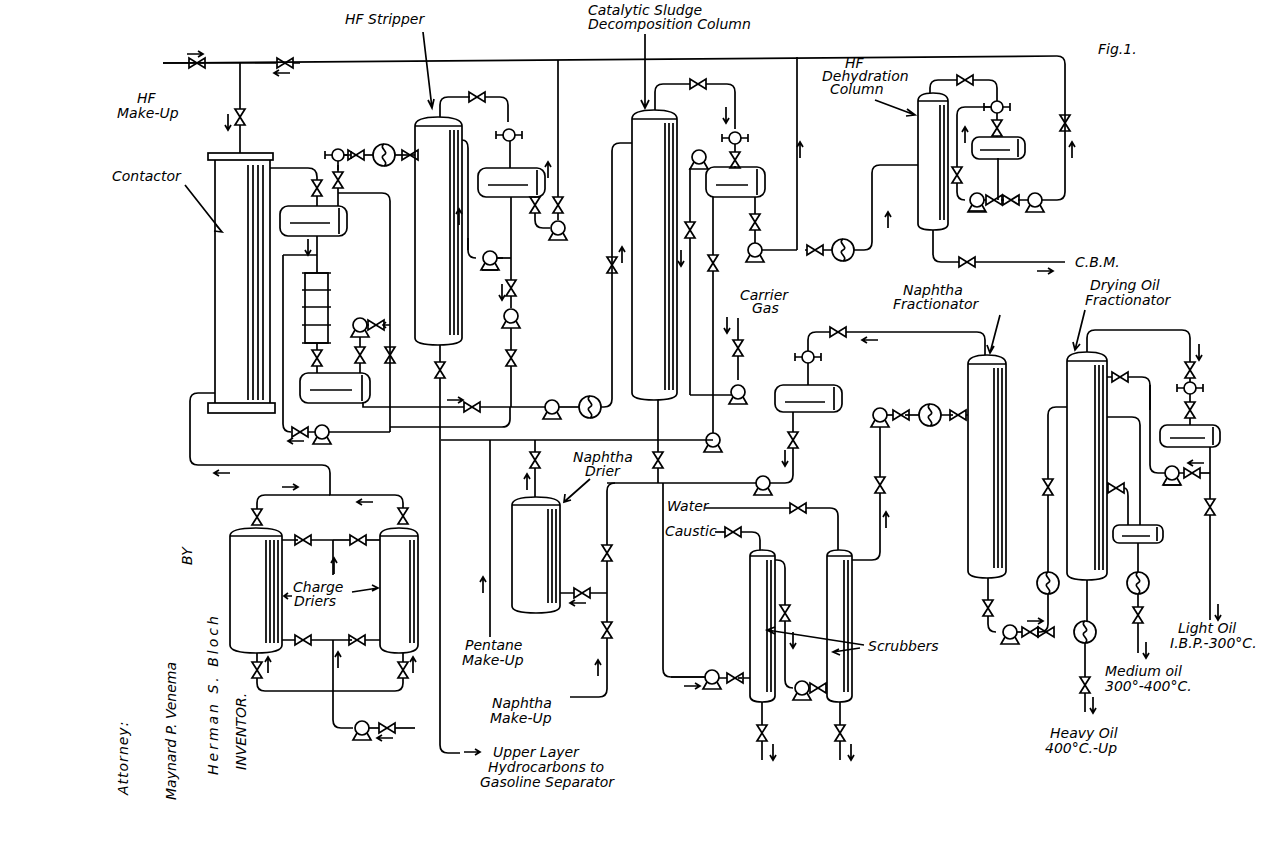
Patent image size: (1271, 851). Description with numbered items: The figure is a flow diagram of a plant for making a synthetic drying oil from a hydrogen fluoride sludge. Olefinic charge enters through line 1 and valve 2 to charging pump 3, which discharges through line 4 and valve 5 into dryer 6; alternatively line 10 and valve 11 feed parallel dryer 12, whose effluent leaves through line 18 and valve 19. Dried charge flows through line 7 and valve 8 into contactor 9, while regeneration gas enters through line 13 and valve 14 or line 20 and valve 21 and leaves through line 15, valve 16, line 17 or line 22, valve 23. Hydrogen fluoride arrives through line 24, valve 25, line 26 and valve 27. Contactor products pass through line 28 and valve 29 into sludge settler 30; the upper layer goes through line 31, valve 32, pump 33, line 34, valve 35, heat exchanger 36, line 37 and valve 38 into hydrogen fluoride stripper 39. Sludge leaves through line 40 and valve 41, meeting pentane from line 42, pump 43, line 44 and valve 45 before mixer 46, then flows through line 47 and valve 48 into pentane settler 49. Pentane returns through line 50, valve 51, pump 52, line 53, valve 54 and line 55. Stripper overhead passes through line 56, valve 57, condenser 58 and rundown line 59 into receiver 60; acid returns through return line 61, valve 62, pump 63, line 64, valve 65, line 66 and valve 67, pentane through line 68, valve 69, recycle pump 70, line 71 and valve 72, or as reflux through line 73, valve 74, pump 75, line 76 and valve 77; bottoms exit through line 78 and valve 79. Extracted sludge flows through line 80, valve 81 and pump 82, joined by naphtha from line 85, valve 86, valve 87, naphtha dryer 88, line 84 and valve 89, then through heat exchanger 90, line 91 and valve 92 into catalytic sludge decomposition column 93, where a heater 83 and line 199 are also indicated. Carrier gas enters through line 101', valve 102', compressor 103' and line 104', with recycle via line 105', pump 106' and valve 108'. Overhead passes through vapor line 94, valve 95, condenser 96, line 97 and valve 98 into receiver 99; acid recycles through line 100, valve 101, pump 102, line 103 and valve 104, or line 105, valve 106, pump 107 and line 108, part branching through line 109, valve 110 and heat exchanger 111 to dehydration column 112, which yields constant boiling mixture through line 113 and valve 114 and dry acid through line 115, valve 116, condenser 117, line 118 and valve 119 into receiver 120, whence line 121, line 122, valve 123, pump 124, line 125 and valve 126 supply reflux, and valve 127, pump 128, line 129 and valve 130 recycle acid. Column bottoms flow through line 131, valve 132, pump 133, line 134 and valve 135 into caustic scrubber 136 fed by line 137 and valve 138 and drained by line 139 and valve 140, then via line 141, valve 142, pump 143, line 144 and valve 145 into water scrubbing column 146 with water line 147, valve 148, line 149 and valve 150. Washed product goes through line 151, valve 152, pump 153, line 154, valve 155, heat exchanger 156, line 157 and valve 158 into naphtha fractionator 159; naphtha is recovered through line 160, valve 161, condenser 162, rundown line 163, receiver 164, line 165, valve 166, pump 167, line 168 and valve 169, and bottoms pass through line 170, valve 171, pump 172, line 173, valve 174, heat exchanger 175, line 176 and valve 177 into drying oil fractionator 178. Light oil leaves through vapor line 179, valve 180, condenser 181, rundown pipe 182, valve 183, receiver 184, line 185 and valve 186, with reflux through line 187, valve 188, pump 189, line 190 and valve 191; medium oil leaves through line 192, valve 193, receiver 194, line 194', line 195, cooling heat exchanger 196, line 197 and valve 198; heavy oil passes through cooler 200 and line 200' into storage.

The line 1 is at (412, 727).
The valve 2 is at (389, 720).
The charging pump 3 is at (360, 740).
The line 4 is at (332, 698).
The valve 5 is at (252, 668).
The dryer 6 is at (230, 540).
The line 7 is at (286, 499).
The valve 8 is at (250, 515).
The contactor 9 is at (214, 282).
The line 10 is at (345, 693).
The valve 11 is at (400, 676).
The dryer 12 is at (380, 574).
The line 13 is at (331, 657).
The valve 14 is at (303, 634).
The line 15 is at (300, 546).
The valve 16 is at (303, 535).
The line 17 is at (334, 556).
The line 18 is at (367, 494).
The valve 19 is at (408, 512).
The line 20 is at (355, 636).
The valve 21 is at (360, 645).
The line 22 is at (337, 538).
The valve 23 is at (360, 535).
The line 24 is at (177, 50).
The valve 25 is at (195, 70).
The line 26 is at (242, 88).
The valve 27 is at (248, 117).
The line 28 is at (310, 168).
The valve 29 is at (311, 188).
The sludge settler 30 is at (347, 228).
The line 31 is at (345, 204).
The valve 32 is at (344, 180).
The pump 33 is at (334, 152).
The line 34 is at (340, 150).
The valve 35 is at (358, 150).
The heat exchanger 36 is at (380, 166).
The line 37 is at (397, 160).
The valve 38 is at (408, 150).
The hydrogen fluoride stripper 39 is at (418, 118).
The line 40 is at (322, 248).
The valve 41 is at (320, 256).
The line 42 is at (489, 494).
The pump 43 is at (326, 440).
The line 44 is at (281, 420).
The valve 45 is at (310, 425).
The mixer 46 is at (330, 283).
The line 47 is at (322, 347).
The valve 48 is at (311, 362).
The pentane settler 49 is at (322, 373).
The line 50 is at (364, 370).
The valve 51 is at (367, 349).
The pump 52 is at (357, 319).
The line 53 is at (374, 320).
The valve 54 is at (381, 318).
The line 55 is at (405, 298).
The line 56 is at (455, 96).
The valve 57 is at (480, 92).
The condenser 58 is at (518, 128).
The rundown line 59 is at (509, 152).
The receiver 60 is at (522, 168).
The return line 61 is at (538, 232).
The valve 62 is at (535, 213).
The pump 63 is at (566, 230).
The line 64 is at (560, 140).
The valve 65 is at (565, 205).
The line 66 is at (512, 60).
The valve 67 is at (287, 56).
The line 68 is at (510, 222).
The valve 69 is at (517, 288).
The recycle pump 70 is at (520, 316).
The line 71 is at (513, 337).
The valve 72 is at (518, 359).
The line 73 is at (484, 255).
The valve 74 is at (497, 255).
The pump 75 is at (492, 268).
The line 76 is at (470, 208).
The valve 77 is at (482, 268).
The line 78 is at (442, 357).
The valve 79 is at (446, 372).
The line 80 is at (404, 407).
The valve 81 is at (472, 400).
The pump 82 is at (554, 397).
The heater 83 is at (584, 397).
The line 84 is at (538, 488).
The line 85 is at (609, 669).
The valve 86 is at (613, 630).
The valve 87 is at (586, 592).
The naphtha dryer 88 is at (561, 550).
The valve 89 is at (530, 460).
The heat exchanger 90 is at (603, 412).
The line 91 is at (611, 361).
The valve 92 is at (607, 268).
The catalytic sludge decomposition column 93 is at (632, 110).
The vapor line 94 is at (662, 92).
The valve 95 is at (702, 82).
The condenser 96 is at (742, 132).
The line 97 is at (745, 146).
The valve 98 is at (745, 158).
The receiver 99 is at (755, 167).
The line 100 is at (717, 223).
The valve 101 is at (731, 344).
The pump 102 is at (730, 434).
The line 103 is at (577, 445).
The valve 104 is at (405, 361).
The line 105 is at (772, 205).
The valve 106 is at (770, 221).
The pump 107 is at (762, 266).
The line 108 is at (779, 239).
The line 109 is at (800, 250).
The valve 110 is at (814, 256).
The heat exchanger 111 is at (844, 239).
The hydrogen fluoride dehydration column 112 is at (918, 128).
The line 113 is at (1020, 261).
The valve 114 is at (972, 258).
The line 115 is at (936, 80).
The valve 116 is at (965, 75).
The condenser 117 is at (1004, 102).
The line 118 is at (1005, 130).
The valve 119 is at (1005, 124).
The receiver 120 is at (1024, 142).
The line 121 is at (1000, 162).
The line 122 is at (999, 202).
The valve 123 is at (980, 188).
The pump 124 is at (974, 209).
The line 125 is at (968, 100).
The valve 126 is at (962, 173).
The valve 127 is at (1012, 195).
The pump 128 is at (1039, 210).
The line 129 is at (1067, 180).
The valve 130 is at (1070, 122).
The line 131 is at (660, 422).
The valve 132 is at (663, 460).
The pump 133 is at (706, 672).
The line 134 is at (728, 676).
The valve 135 is at (732, 684).
The caustic scrubber 136 is at (750, 602).
The line 137 is at (762, 532).
The valve 138 is at (730, 537).
The line 139 is at (760, 718).
The valve 140 is at (757, 737).
The line 141 is at (786, 578).
The valve 142 is at (790, 612).
The pump 143 is at (800, 680).
The line 144 is at (804, 698).
The valve 145 is at (815, 697).
The water scrubbing column 146 is at (853, 619).
The line 147 is at (835, 507).
The valve 148 is at (797, 503).
The line 149 is at (842, 713).
The valve 150 is at (845, 735).
The line 151 is at (882, 464).
The valve 152 is at (886, 485).
The pump 153 is at (874, 411).
The line 154 is at (900, 408).
The valve 155 is at (907, 420).
The heat exchanger 156 is at (920, 408).
The line 157 is at (952, 420).
The valve 158 is at (957, 408).
The naphtha fractionator 159 is at (1007, 381).
The line 160 is at (878, 332).
The valve 161 is at (838, 328).
The condenser 162 is at (802, 354).
The rundown line 163 is at (810, 370).
The receiver 164 is at (842, 390).
The line 165 is at (795, 433).
The valve 166 is at (799, 444).
The pump 167 is at (760, 478).
The line 168 is at (608, 512).
The valve 169 is at (613, 555).
The line 170 is at (986, 593).
The valve 171 is at (982, 608).
The pump 172 is at (1007, 640).
The line 173 is at (1032, 625).
The valve 174 is at (1046, 638).
The heat exchanger 175 is at (1037, 584).
The line 176 is at (1047, 448).
The valve 177 is at (1043, 489).
The drying oil fractionator 178 is at (1068, 355).
The vapor line 179 is at (1092, 343).
The valve 180 is at (1187, 365).
The condenser 181 is at (1200, 384).
The rundown pipe 182 is at (1200, 396).
The valve 183 is at (1197, 410).
The receiver 184 is at (1220, 425).
The line 185 is at (1212, 482).
The valve 186 is at (1215, 510).
The line 187 is at (1195, 479).
The valve 188 is at (1170, 466).
The pump 189 is at (1167, 481).
The line 190 is at (1149, 398).
The valve 191 is at (1122, 372).
The line 192 is at (1118, 482).
The valve 193 is at (1126, 512).
The receiver 194 is at (1158, 535).
The line 195 is at (1140, 557).
The cooling heat exchanger 196 is at (1150, 580).
The line 197 is at (1140, 598).
The valve 198 is at (1144, 613).
The line 199 is at (1089, 603).
The cooler 200 is at (1101, 635).
The line 101' is at (754, 360).
The valve 102' is at (750, 331).
The compressor 103' is at (754, 387).
The line 104' is at (708, 404).
The line 105' is at (735, 182).
The pump 106' is at (697, 145).
The valve 108' is at (708, 316).
The line 194' is at (1129, 471).
The line 200' is at (1104, 660).